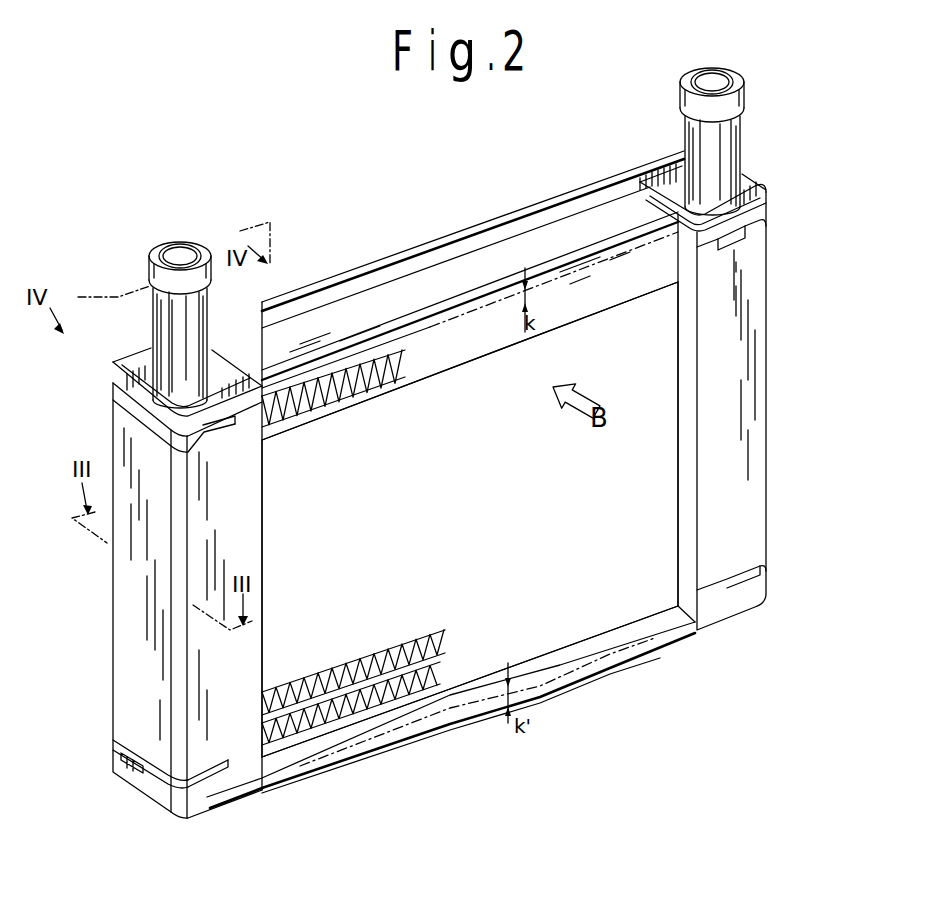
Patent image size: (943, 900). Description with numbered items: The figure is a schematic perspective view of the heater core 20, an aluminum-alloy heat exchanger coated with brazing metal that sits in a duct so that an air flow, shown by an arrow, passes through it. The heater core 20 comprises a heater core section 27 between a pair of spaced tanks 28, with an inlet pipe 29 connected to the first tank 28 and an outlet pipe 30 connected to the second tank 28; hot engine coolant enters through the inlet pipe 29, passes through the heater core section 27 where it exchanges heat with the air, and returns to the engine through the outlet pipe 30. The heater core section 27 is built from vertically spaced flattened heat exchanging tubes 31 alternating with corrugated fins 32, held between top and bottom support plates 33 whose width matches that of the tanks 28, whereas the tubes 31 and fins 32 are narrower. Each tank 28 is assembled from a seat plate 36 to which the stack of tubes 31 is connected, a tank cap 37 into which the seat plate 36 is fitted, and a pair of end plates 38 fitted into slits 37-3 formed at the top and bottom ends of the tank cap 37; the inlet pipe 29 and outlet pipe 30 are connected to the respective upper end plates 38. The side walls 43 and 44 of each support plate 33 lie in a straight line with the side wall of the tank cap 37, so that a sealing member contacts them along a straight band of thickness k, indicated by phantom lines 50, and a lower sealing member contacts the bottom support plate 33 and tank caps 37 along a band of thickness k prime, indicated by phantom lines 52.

The heater core 20 is at (455, 196).
The heater core section 27 is at (500, 509).
The tank 28 is at (740, 395).
The inlet pipe 29 is at (152, 303).
The outlet pipe 30 is at (741, 152).
The heat exchanging tube 31 is at (384, 398).
The corrugated fin 32 is at (308, 404).
The support plate 33 is at (394, 318).
The seat plate 36 is at (126, 390).
The tank cap 37 is at (124, 455).
The slit 37-3 is at (114, 744).
The end plate 38 is at (113, 401).
The side wall 43 is at (413, 250).
The side wall 44 is at (468, 308).
The phantom lines 50 is at (604, 272).
The phantom lines 52 is at (570, 665).